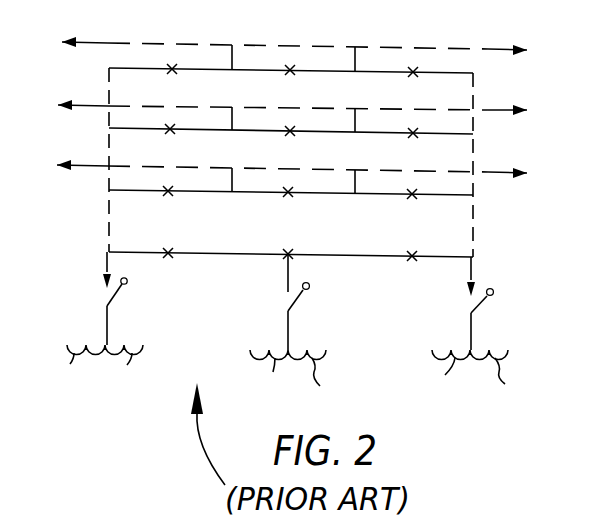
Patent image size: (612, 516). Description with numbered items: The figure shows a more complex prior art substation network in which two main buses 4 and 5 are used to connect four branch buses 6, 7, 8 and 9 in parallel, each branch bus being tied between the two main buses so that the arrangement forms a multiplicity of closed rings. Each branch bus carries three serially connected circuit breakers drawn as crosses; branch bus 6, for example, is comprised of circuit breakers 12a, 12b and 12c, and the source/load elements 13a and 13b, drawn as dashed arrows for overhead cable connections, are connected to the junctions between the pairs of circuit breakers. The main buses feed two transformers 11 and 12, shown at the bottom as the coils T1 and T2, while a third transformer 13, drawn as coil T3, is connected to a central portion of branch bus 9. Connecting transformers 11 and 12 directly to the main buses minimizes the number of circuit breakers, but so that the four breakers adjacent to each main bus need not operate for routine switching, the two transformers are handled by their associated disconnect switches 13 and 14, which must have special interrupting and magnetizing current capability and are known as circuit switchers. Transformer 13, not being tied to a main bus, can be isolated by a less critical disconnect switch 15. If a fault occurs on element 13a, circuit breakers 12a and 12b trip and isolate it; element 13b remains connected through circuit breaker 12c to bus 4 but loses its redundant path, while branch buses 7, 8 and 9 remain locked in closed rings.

The main bus 4 is at (475, 229).
The main bus 5 is at (108, 222).
The branch bus 6 is at (343, 70).
The branch bus 7 is at (342, 132).
The branch bus 8 is at (341, 194).
The branch bus 9 is at (341, 256).
The transformer 11 is at (511, 380).
The transformer 12 is at (89, 371).
The transformer / disconnect switch 13 is at (469, 310).
The circuit breaker 12a is at (173, 63).
The circuit breaker 12b is at (290, 64).
The circuit breaker 12c is at (413, 67).
The element 13a is at (233, 44).
The element 13b is at (356, 48).
The disconnect switch 14 is at (104, 300).
The disconnect switch 15 is at (289, 306).
The transformer T1 is at (420, 336).
The transformer T2 is at (95, 330).
The transformer T3 is at (287, 332).